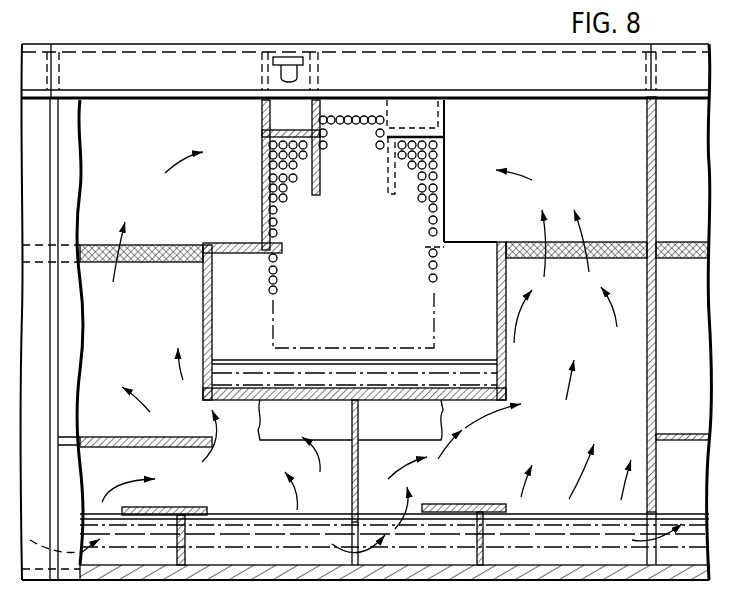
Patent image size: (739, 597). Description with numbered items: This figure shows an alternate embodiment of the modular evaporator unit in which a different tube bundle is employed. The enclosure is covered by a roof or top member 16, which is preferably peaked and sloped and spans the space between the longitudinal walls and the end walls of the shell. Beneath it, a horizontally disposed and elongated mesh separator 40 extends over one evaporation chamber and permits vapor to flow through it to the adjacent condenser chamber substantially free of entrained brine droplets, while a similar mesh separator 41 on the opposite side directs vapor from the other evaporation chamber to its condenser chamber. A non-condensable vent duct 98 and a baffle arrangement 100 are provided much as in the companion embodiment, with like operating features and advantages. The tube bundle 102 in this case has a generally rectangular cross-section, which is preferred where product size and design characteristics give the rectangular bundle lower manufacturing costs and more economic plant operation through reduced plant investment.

The top member 16 is at (575, 77).
The mesh separator 40 is at (150, 263).
The mesh separator 41 is at (616, 238).
The non-condensable vent duct 98 is at (262, 128).
The baffle arrangement 100 is at (317, 197).
The tube bundle 102 is at (424, 176).